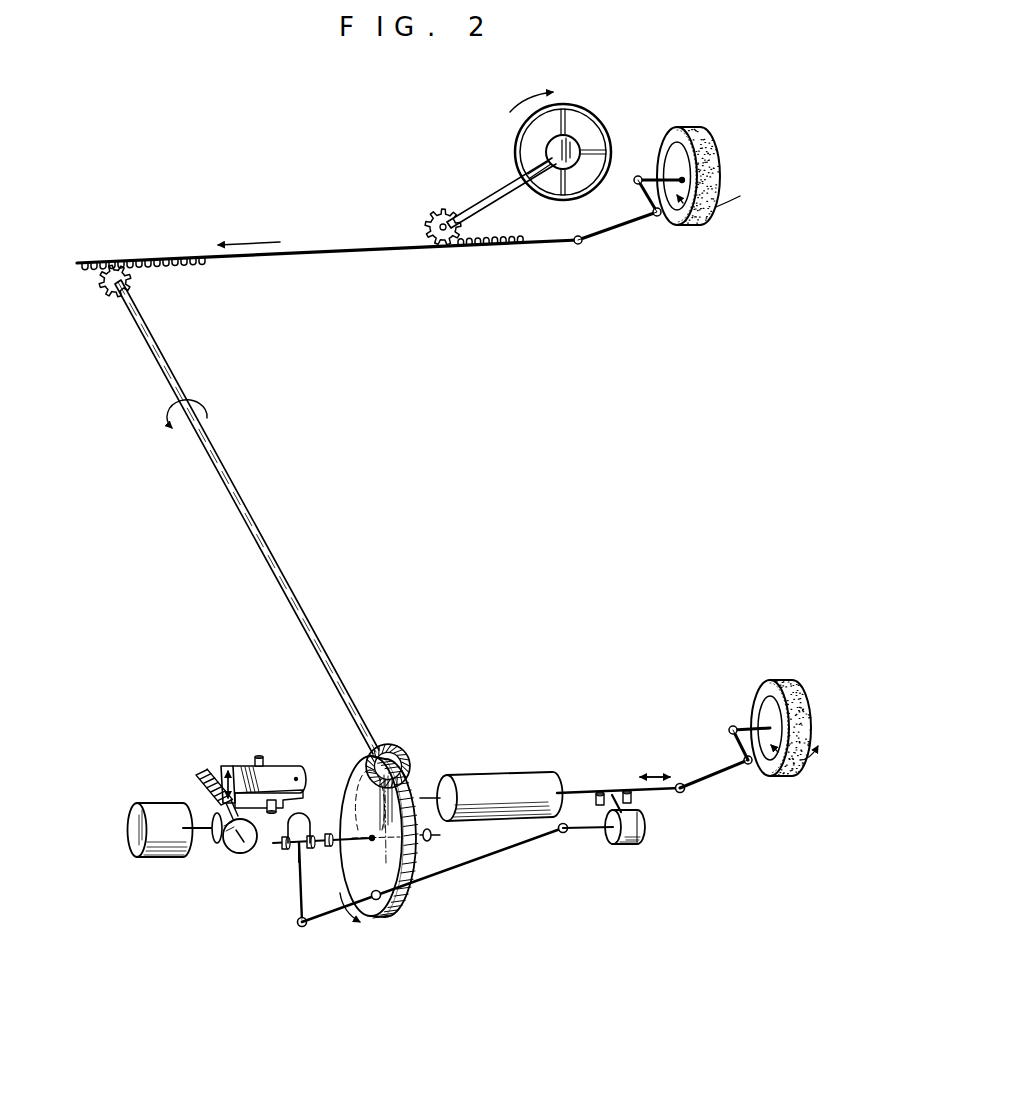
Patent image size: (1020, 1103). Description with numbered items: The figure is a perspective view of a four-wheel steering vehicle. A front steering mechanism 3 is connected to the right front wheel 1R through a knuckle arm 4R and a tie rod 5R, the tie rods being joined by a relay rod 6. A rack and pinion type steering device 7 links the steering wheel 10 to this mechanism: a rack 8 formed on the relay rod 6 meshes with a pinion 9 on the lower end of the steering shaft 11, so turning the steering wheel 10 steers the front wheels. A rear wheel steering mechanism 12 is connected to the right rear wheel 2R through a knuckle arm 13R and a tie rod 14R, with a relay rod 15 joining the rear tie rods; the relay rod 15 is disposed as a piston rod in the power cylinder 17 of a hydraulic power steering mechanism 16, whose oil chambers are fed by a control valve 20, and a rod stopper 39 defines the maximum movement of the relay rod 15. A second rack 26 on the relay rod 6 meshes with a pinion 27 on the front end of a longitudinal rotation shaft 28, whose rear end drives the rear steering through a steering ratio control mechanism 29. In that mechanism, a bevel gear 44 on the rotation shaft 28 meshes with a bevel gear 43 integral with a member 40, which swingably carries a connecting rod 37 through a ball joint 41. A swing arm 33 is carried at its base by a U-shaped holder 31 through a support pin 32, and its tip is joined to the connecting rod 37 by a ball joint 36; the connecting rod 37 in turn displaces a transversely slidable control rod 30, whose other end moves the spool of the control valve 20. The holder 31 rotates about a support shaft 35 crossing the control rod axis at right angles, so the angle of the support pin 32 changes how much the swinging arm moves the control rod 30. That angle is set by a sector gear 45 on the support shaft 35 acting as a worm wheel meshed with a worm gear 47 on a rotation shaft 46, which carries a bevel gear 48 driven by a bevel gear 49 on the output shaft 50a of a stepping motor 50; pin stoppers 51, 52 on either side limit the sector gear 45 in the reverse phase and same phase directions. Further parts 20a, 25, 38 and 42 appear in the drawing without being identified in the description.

The right front wheel 1R is at (700, 125).
The right rear wheel 2R is at (780, 682).
The front steering mechanism 3 is at (660, 243).
The knuckle arm 4R is at (636, 174).
The tie rod 5R is at (622, 234).
The relay rod 6 is at (274, 253).
The steering device 7 is at (462, 187).
The rack 8 is at (487, 238).
The pinion 9 is at (428, 213).
The steering wheel 10 is at (617, 101).
The steering shaft 11 is at (492, 188).
The rear wheel steering mechanism 12 is at (712, 822).
The knuckle arm 13R is at (733, 725).
The tie rod 14R is at (718, 776).
The relay rod 15 is at (573, 792).
The hydraulic power steering mechanism 16 is at (518, 765).
The power cylinder 17 is at (487, 778).
The control valve 20 is at (618, 852).
The piston 20a is at (640, 843).
The pivot pin 25 is at (614, 792).
The rack 26 is at (180, 268).
The pinion 27 is at (100, 294).
The rotation shaft 28 is at (258, 516).
The steering ratio control mechanism 29 is at (289, 930).
The control rod 30 is at (590, 834).
The U-shaped holder 31 is at (316, 835).
The support pin 32 is at (296, 860).
The swing arm 33 is at (300, 900).
The support shaft 35 is at (293, 812).
The ball joint 36 is at (304, 930).
The connecting rod 37 is at (500, 857).
The pivot pin 38 is at (563, 834).
The rod stopper 39 is at (600, 797).
The member 40 is at (374, 903).
The ball joint 41 is at (385, 915).
The gear center 42 is at (372, 841).
The bevel gear 43 is at (418, 862).
The bevel gear 44 is at (398, 758).
The sector gear 45 is at (228, 770).
The rotation shaft 46 is at (216, 800).
The worm gear 47 is at (205, 770).
The bevel gear 48 is at (238, 855).
The bevel gear 49 is at (216, 845).
The stepping motor 50 is at (130, 818).
The output shaft 50a is at (196, 835).
The pin stopper 51 is at (258, 757).
The pin stopper 52 is at (271, 800).